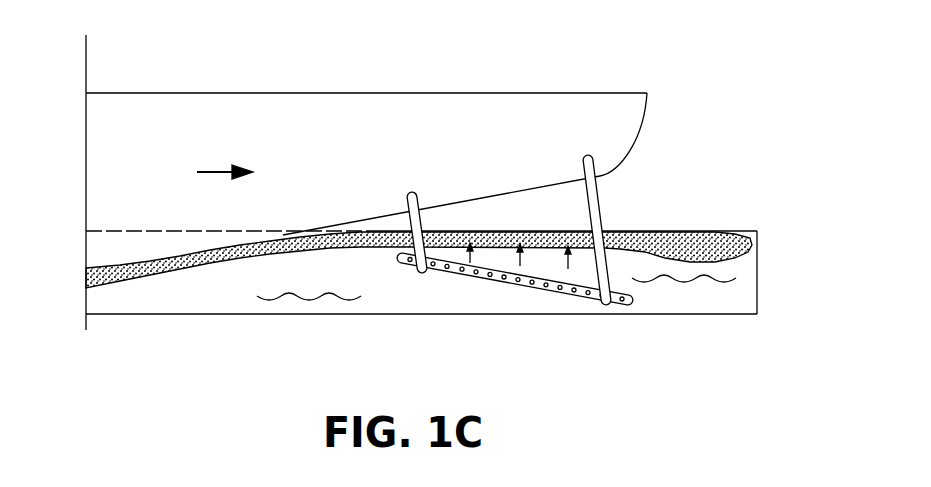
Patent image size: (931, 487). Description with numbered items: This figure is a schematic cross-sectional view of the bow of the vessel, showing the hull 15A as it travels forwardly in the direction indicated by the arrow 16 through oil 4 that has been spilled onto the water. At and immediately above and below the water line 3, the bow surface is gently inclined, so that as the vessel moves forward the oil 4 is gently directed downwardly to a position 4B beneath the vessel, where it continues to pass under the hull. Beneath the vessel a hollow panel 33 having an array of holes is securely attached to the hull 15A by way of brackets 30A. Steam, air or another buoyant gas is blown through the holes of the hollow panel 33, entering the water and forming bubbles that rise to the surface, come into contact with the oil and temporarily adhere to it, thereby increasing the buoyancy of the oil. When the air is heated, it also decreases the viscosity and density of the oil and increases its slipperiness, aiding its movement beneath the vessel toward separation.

The hull 15A is at (323, 138).
The arrow 16 is at (220, 170).
The brackets 30A is at (411, 194).
The water line 3 is at (717, 231).
The oil 4 is at (632, 235).
The position beneath the vessel 4B is at (223, 262).
The hollow panel 33 is at (473, 277).